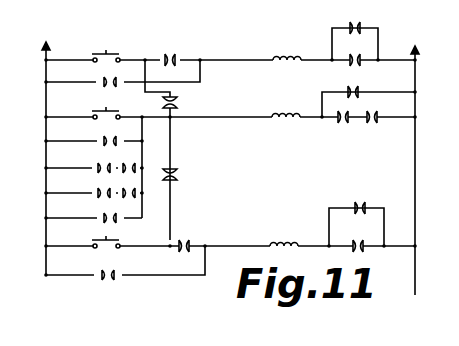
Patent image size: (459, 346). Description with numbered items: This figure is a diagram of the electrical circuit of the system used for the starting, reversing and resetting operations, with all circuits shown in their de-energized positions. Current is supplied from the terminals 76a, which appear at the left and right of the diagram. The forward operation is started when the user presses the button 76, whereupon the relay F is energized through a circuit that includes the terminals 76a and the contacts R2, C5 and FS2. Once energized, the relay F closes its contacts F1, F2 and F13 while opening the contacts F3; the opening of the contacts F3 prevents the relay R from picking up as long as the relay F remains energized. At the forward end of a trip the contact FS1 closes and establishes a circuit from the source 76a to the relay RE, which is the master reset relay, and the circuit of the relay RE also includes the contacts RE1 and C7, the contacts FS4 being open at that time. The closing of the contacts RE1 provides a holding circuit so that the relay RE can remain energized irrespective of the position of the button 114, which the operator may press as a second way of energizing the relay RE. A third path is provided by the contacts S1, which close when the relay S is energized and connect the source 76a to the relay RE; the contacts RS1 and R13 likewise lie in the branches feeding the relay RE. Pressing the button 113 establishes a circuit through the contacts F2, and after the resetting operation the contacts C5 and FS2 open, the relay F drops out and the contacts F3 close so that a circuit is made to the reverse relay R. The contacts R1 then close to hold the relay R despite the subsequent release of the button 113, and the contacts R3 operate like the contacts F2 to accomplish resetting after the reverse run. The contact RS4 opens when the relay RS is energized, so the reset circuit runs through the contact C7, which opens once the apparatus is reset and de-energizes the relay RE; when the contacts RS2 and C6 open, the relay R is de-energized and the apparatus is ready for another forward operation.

The terminals 76a is at (44, 37).
The button 76 is at (99, 53).
The button 114 is at (92, 110).
The button 113 is at (92, 240).
The contacts F1 is at (108, 76).
The contacts R2 is at (168, 54).
The contacts R3 is at (180, 105).
The contacts S1 is at (107, 135).
The contact FS1 is at (104, 161).
The contacts F13 is at (132, 160).
The contacts RS1 is at (105, 186).
The contacts R13 is at (133, 186).
The contacts RE1 is at (108, 211).
The contacts F2 is at (180, 176).
The contacts F3 is at (184, 239).
The contacts R1 is at (105, 269).
The relay F is at (287, 51).
The contacts C5 is at (354, 21).
The contacts FS2 is at (354, 54).
The contacts C7 is at (354, 86).
The relay RE is at (286, 107).
The contacts FS4 is at (345, 112).
The contact RS4 is at (375, 112).
The relay R is at (284, 237).
The contacts C6 is at (358, 202).
The contacts RS2 is at (354, 240).